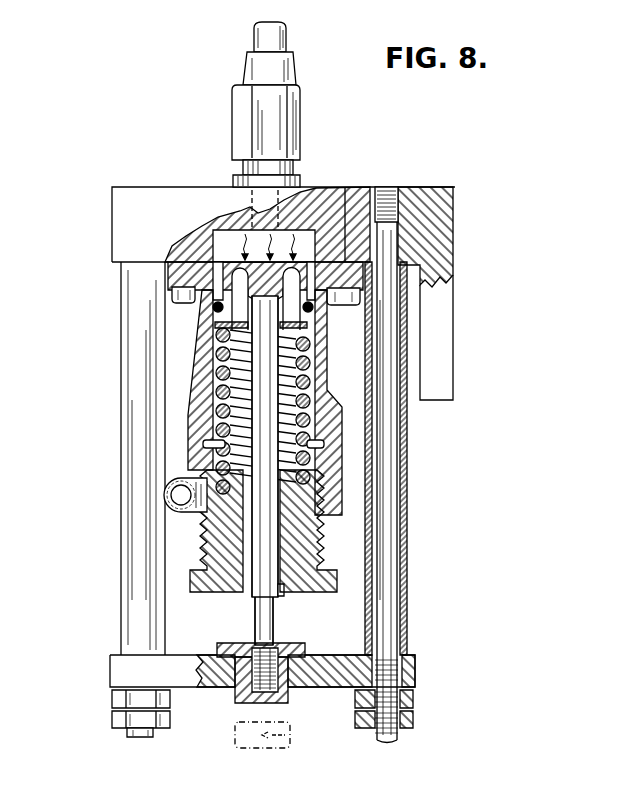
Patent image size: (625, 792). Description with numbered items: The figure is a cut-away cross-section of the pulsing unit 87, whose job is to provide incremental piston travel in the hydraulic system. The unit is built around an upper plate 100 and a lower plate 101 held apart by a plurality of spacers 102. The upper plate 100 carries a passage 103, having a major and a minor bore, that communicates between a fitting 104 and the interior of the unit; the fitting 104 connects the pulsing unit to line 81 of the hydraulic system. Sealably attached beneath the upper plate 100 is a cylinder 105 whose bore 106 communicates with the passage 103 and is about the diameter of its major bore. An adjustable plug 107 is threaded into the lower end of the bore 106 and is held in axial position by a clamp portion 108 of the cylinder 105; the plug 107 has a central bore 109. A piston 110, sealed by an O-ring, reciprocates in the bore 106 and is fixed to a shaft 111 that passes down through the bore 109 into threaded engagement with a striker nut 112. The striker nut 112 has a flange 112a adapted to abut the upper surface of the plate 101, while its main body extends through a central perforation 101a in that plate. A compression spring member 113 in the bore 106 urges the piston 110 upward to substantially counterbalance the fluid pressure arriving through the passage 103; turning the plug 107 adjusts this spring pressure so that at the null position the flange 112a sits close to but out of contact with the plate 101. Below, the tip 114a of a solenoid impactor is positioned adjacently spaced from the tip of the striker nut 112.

The line 81 is at (288, 38).
The fitting 104 is at (301, 126).
The upper plate 100 is at (126, 196).
The pulsing unit 87 is at (460, 195).
The passage 103 is at (303, 243).
The spacers 102 is at (135, 283).
The cylinder 105 is at (204, 335).
The bore 106 is at (213, 371).
The piston 110 is at (308, 319).
The compression spring member 113 is at (320, 378).
The clamp portion 108 is at (193, 505).
The adjustable plug 107 is at (207, 582).
The shaft 111 is at (257, 598).
The central bore 109 is at (282, 596).
The flange 112a is at (305, 657).
The striker nut 112 is at (288, 703).
The plate 101 is at (117, 665).
The central perforation 101a is at (243, 690).
The tip 114a is at (293, 740).